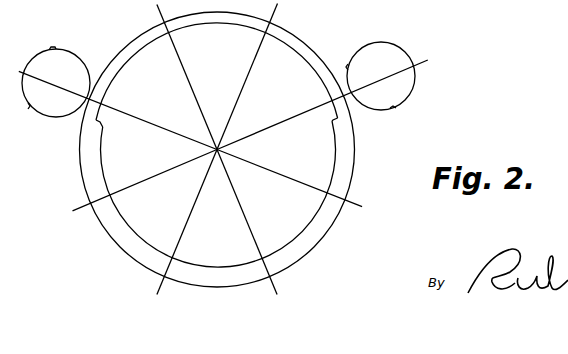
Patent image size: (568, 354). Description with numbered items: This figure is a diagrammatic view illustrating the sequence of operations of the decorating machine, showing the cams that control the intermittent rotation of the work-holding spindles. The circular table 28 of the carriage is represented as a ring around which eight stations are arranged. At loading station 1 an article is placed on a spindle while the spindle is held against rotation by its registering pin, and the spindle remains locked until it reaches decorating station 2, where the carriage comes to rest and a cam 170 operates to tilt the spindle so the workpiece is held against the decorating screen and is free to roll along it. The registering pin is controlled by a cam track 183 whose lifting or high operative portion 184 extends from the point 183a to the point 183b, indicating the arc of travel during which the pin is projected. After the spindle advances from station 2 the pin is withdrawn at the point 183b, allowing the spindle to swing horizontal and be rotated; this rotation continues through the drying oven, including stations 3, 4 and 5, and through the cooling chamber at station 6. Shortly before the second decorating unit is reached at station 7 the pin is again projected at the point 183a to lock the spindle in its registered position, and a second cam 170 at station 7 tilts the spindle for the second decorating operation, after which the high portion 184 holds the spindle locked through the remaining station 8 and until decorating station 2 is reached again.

The loading station 1 is at (175, 75).
The decorating station 2 is at (118, 101).
The station 3 is at (135, 189).
The station 4 is at (183, 236).
The station 5 is at (253, 235).
The station 6 is at (299, 186).
The second decorating station 7 is at (322, 99).
The position 8 is at (255, 75).
The circular table 28 is at (119, 54).
The cam 170 is at (68, 29).
The cam track 183 is at (336, 165).
The point 183a is at (338, 119).
The point 183b is at (96, 124).
The operative cam section 184 is at (305, 57).